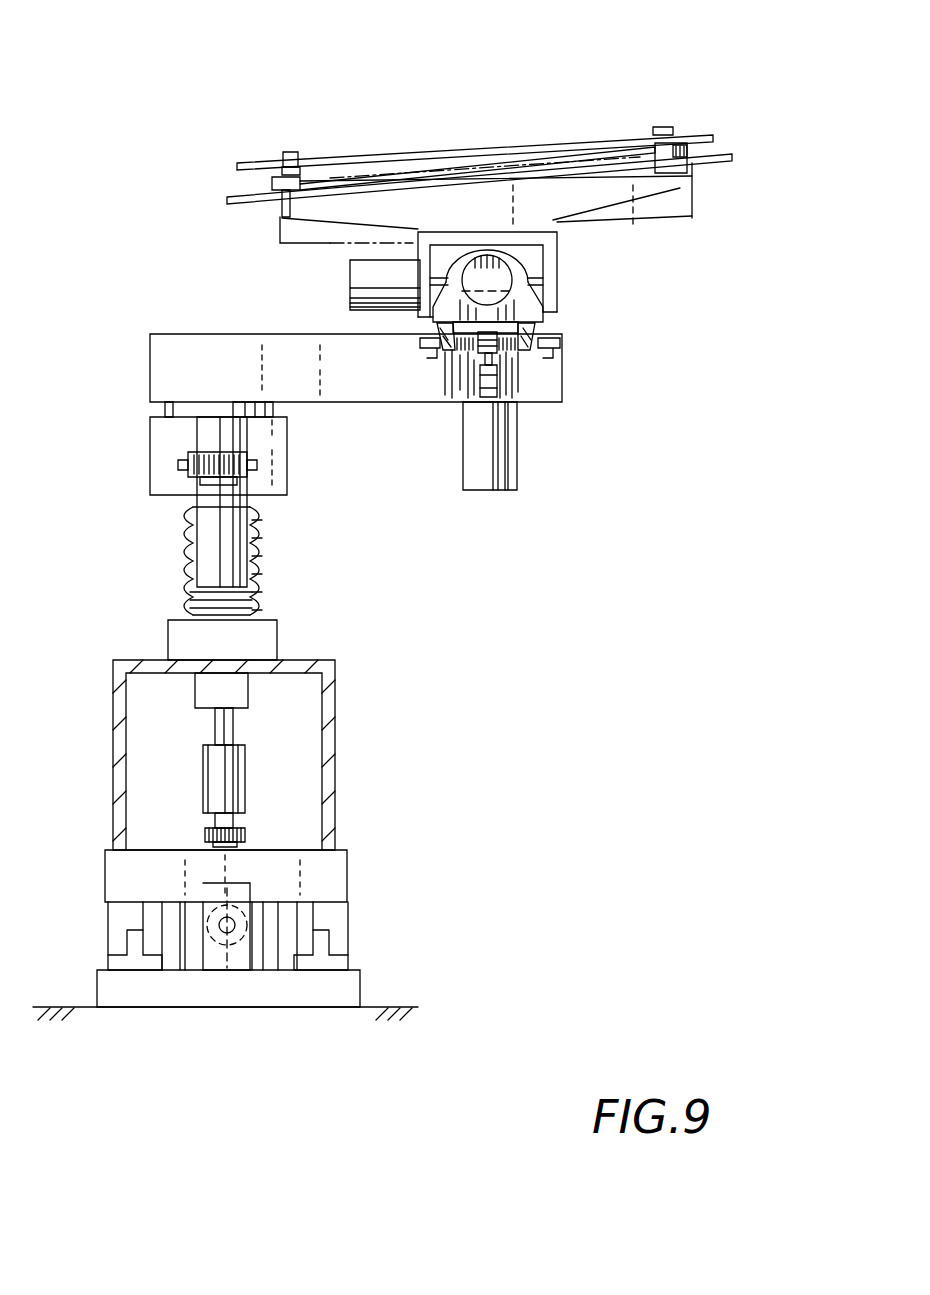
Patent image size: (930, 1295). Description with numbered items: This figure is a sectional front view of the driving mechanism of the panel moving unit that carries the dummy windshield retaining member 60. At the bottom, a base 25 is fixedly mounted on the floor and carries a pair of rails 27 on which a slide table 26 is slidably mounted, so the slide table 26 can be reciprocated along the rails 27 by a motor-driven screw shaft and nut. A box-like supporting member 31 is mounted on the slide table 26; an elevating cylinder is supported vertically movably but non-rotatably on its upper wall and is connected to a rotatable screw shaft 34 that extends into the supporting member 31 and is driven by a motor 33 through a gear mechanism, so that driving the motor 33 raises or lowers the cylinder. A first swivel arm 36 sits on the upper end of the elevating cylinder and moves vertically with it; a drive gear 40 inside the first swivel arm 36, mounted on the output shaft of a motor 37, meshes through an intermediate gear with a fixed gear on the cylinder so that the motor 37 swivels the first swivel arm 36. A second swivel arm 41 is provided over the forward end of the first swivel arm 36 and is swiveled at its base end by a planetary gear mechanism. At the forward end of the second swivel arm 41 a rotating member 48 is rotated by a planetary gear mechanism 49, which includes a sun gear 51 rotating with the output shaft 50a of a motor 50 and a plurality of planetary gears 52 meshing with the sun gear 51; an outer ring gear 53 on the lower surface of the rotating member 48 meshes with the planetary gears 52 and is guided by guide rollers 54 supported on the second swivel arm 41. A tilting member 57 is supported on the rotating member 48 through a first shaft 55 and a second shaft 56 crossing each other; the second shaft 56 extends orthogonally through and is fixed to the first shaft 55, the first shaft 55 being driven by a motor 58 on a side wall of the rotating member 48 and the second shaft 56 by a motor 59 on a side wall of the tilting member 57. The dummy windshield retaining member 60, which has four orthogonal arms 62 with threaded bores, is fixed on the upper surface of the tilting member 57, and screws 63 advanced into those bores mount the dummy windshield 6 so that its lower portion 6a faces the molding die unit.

The dummy windshield 6 is at (729, 155).
The lower portion of the dummy windshield 6a is at (553, 140).
The base 25 is at (216, 980).
The slide table 26 is at (330, 870).
The rails 27 is at (130, 937).
The supporting member 31 is at (336, 768).
The motor 33 is at (240, 776).
The screw shaft 34 is at (218, 721).
The first swivel arm 36 is at (172, 440).
The motor 37 is at (208, 550).
The drive gear 40 is at (223, 452).
The second swivel arm 41 is at (172, 364).
The rotating member 48 is at (440, 318).
The planetary gear mechanism 49 is at (468, 364).
The motor 50 is at (498, 472).
The output shaft 50a is at (520, 402).
The sun gear 51 is at (505, 365).
The planetary gears 52 is at (500, 348).
The outer ring gear 53 is at (540, 329).
The guide rollers 54 is at (420, 338).
The first shaft 55 is at (572, 286).
The motor 58 is at (487, 266).
The second shaft 56 is at (530, 277).
The tilting member 57 is at (560, 236).
The motor 59 is at (366, 283).
The dummy windshield retaining member 60 is at (290, 225).
The arms 62 is at (692, 201).
The screws 63 is at (290, 152).